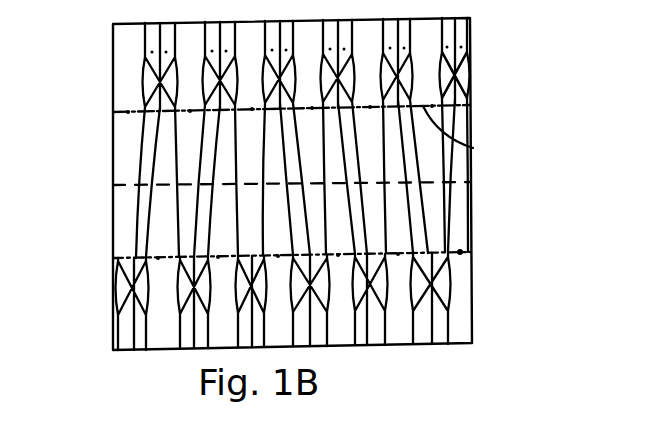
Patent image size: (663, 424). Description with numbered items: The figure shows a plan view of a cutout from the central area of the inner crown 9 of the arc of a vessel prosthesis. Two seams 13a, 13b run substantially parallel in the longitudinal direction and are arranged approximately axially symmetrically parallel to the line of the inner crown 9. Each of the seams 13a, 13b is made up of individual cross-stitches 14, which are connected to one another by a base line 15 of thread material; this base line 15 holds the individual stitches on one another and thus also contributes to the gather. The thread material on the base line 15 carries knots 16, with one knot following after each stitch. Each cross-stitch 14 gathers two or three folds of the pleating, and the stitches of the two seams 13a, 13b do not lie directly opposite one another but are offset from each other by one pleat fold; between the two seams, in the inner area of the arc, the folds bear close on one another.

The inner crown 9 is at (117, 188).
The seam 13a is at (470, 105).
The seam 13b is at (473, 260).
The cross-stitches 14 is at (470, 53).
The base line 15 is at (473, 148).
The knots 16 is at (460, 252).